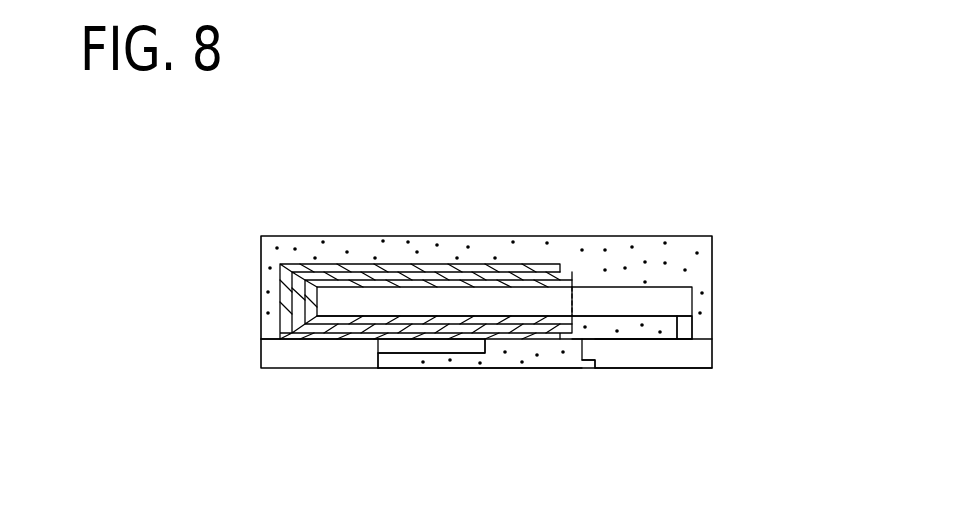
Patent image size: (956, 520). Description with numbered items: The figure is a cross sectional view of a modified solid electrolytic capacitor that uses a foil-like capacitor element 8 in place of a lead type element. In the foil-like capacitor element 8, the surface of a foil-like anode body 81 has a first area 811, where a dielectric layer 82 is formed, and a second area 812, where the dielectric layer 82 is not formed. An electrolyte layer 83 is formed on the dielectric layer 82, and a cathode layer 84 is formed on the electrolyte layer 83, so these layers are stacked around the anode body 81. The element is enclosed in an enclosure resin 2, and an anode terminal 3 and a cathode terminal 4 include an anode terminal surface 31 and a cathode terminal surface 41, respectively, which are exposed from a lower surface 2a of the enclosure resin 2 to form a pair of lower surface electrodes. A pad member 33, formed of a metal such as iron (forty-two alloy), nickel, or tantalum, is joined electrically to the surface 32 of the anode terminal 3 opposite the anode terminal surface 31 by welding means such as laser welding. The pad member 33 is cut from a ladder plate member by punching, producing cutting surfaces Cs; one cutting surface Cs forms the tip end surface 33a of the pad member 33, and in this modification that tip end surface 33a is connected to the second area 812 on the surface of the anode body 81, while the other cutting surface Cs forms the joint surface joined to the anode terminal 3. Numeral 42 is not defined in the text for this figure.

The foil-like capacitor element 8 is at (426, 222).
The foil-like anode body 81 is at (444, 235).
The dielectric layer 82 is at (438, 285).
The electrolyte layer 83 is at (403, 277).
The cathode layer 84 is at (387, 268).
The first area 811 is at (463, 329).
The second area 812 is at (660, 278).
The enclosure resin 2 is at (622, 252).
The lower surface 2a is at (517, 368).
The anode terminal 3 is at (647, 394).
The anode terminal surface 31 is at (608, 370).
The surface 32 is at (632, 333).
The pad member 33 is at (693, 328).
The tip end surface 33a is at (686, 316).
The cutting surface Cs is at (725, 333).
The cathode terminal 4 is at (372, 397).
The cathode terminal surface 41 is at (287, 370).
The base plate thin portion 42 is at (375, 340).